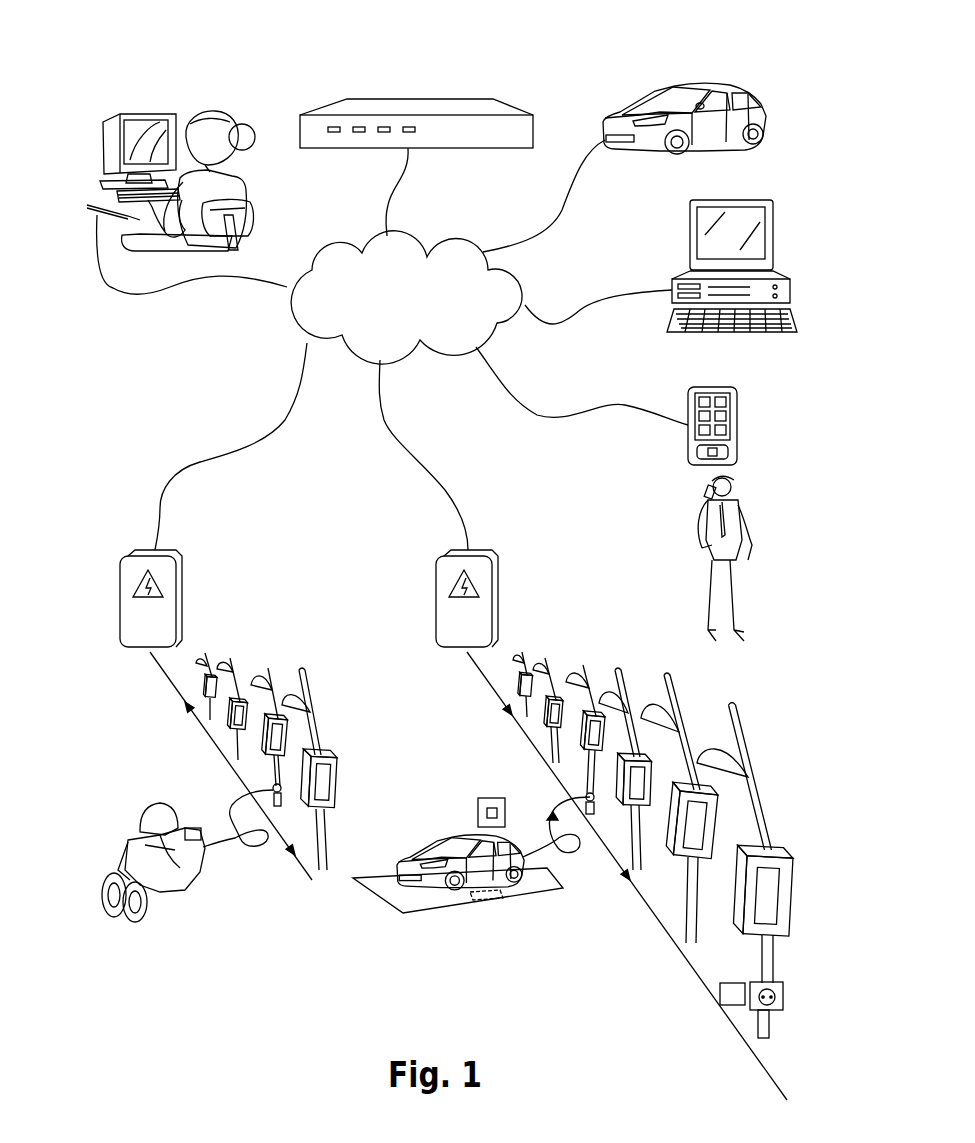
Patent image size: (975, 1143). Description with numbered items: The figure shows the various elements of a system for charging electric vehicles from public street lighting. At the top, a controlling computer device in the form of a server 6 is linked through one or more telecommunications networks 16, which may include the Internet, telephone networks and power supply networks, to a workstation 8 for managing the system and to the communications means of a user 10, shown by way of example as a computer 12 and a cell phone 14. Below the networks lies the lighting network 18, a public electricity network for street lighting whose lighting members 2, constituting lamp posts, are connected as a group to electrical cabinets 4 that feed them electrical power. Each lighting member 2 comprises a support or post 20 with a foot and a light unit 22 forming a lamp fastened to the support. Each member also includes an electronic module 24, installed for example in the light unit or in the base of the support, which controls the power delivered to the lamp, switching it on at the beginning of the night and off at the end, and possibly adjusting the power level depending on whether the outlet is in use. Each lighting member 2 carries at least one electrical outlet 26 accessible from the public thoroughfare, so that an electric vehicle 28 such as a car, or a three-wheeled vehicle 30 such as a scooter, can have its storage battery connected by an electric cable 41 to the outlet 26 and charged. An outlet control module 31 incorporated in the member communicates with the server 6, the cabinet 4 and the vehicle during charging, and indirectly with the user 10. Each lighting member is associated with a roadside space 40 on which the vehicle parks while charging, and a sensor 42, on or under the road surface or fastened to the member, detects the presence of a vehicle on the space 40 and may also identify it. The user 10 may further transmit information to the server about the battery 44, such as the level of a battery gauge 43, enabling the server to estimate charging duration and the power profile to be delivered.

The lighting member 2 is at (240, 661).
The electrical cabinet 4 is at (180, 610).
The server 6 is at (463, 98).
The workstation 8 is at (172, 92).
The user 10 is at (673, 545).
The computer 12 is at (733, 208).
The cell phone 14 is at (737, 414).
The telecommunications network 16 is at (443, 267).
The lighting network 18 is at (478, 687).
The support 20 is at (768, 950).
The light unit 22 is at (716, 755).
The electronic module 24 is at (337, 748).
The electrical outlet 26 is at (783, 990).
The electric vehicle 28 is at (672, 95).
The three-wheeled vehicle 30 is at (182, 888).
The outlet control module 31 is at (720, 995).
The roadside space 40 is at (540, 897).
The electric cable 41 is at (548, 812).
The sensor 42 is at (495, 900).
The battery gauge 43 is at (485, 812).
The battery 44 is at (494, 800).